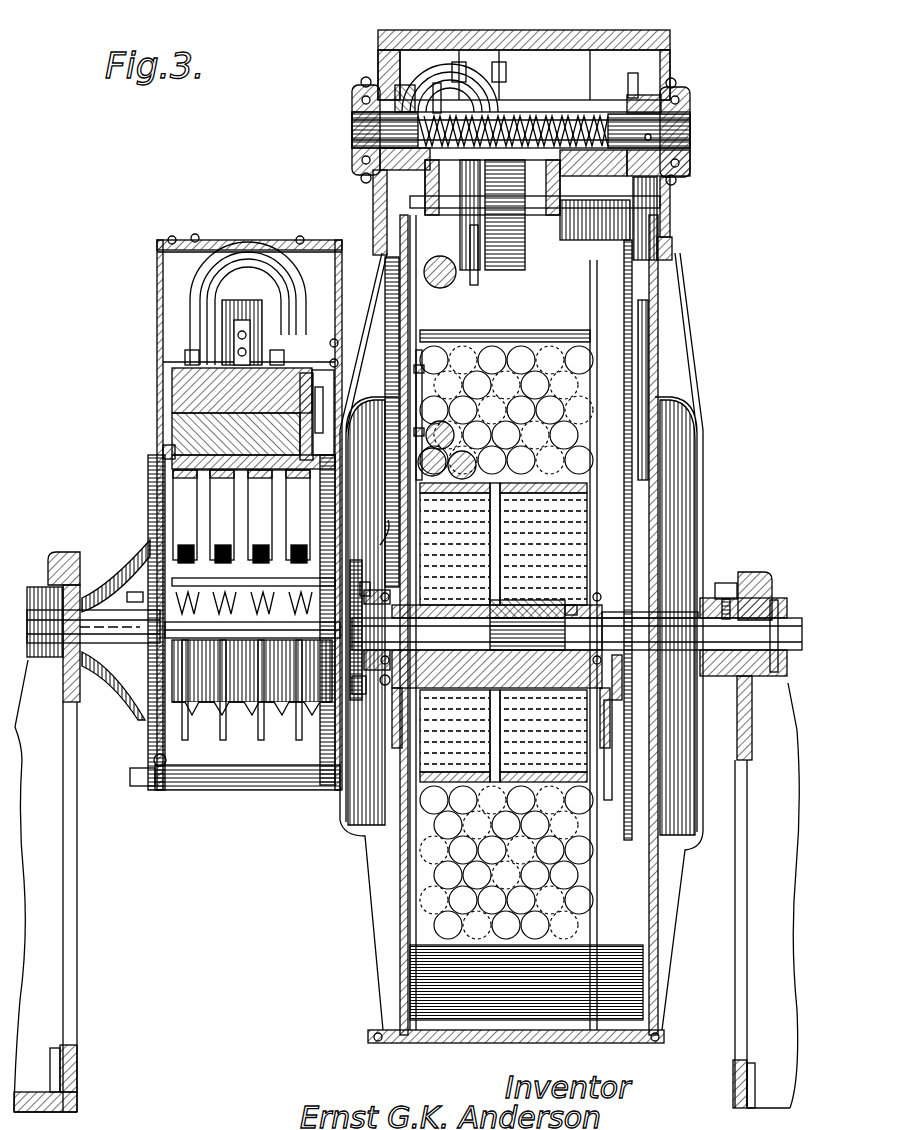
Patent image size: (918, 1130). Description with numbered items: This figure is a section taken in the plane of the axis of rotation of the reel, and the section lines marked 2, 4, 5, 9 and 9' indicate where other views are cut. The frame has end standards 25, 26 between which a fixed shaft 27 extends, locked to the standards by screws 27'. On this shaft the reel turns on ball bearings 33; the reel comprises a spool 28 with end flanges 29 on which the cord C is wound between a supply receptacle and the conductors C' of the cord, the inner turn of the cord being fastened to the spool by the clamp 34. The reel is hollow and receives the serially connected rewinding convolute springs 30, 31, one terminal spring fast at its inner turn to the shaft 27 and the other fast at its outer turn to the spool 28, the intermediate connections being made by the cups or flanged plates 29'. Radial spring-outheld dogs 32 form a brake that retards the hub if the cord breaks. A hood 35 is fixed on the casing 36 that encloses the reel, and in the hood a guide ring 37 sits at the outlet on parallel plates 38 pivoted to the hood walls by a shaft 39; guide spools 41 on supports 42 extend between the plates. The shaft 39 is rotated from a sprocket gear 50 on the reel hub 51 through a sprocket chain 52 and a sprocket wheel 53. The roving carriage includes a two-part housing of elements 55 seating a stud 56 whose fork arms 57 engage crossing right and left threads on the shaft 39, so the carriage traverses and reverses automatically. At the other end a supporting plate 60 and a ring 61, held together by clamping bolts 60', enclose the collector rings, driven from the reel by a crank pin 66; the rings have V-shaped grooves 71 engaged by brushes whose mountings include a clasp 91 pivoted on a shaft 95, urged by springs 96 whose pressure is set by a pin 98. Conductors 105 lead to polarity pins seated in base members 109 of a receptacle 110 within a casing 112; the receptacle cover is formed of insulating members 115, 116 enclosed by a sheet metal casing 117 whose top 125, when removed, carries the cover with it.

The section line 2 is at (628, 66).
The section line 4 is at (548, 66).
The section line 5 is at (441, 80).
The section line 9 is at (235, 516).
The section line 9' is at (379, 526).
The end standard 25 is at (68, 912).
The end standard 26 is at (740, 866).
The fixed shaft 27 is at (702, 581).
The screws 27' is at (743, 606).
The spool 28 is at (520, 470).
The end flanges 29 is at (516, 622).
The cups or flanged plates 29' is at (620, 770).
The rewinding convolute spring 30 is at (560, 545).
The rewinding convolute spring 31 is at (347, 830).
The dogs 32 is at (476, 630).
The ball bearings 33 is at (570, 604).
The clamp 34 is at (427, 413).
The hood 35 is at (512, 34).
The casing 36 is at (378, 268).
The guide ring 37 is at (440, 88).
The plates 38 is at (402, 216).
The shaft 39 is at (672, 134).
The guide spools 41 is at (492, 226).
The supports 42 is at (532, 226).
The sprocket gear 50 is at (650, 690).
The hub 51 is at (620, 690).
The sprocket chain 52 is at (658, 228).
The sprocket wheel 53 is at (636, 96).
The housing elements 55 is at (362, 84).
The stud 56 is at (397, 92).
The fork arms 57 is at (354, 127).
The supporting plate 60 is at (123, 622).
The clamping bolts 60' is at (136, 797).
The ring 61 is at (330, 760).
The crank pin 66 is at (368, 579).
The V-shaped grooves 71 is at (262, 700).
The clasp 91 is at (230, 530).
The pivot shaft 95 is at (93, 617).
The springs 96 is at (190, 583).
The pin 98 is at (193, 597).
The conductors 105 is at (172, 474).
The base members 109 is at (162, 450).
The receptacle 110 is at (183, 350).
The casing 112 is at (187, 778).
The insulating member 115 is at (172, 382).
The insulating member 116 is at (172, 427).
The sheet metal casing 117 is at (158, 394).
The casing top 125 is at (158, 270).
The cord C is at (670, 320).
The conductors C' is at (191, 303).